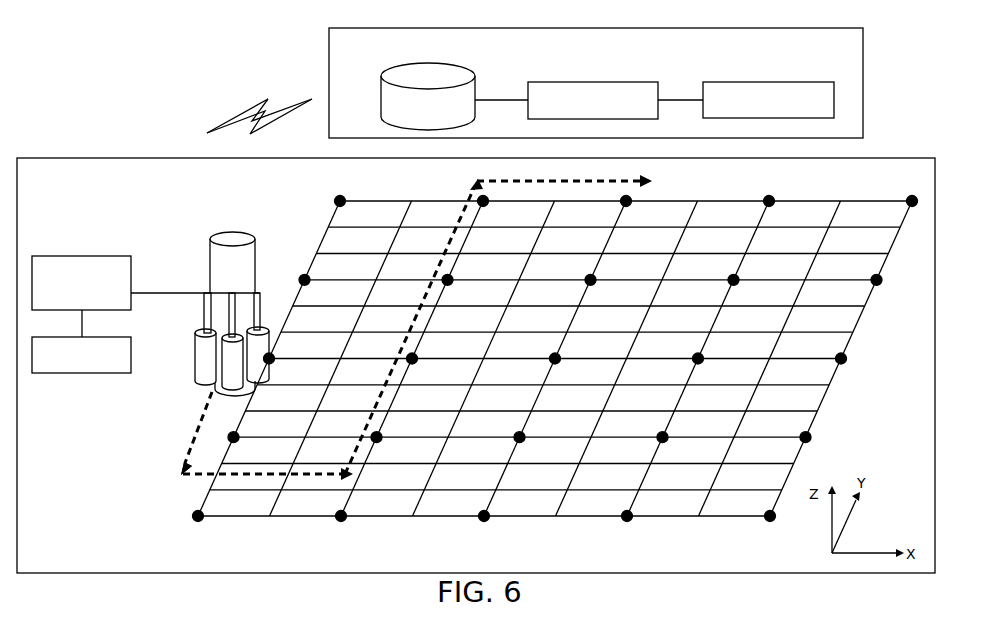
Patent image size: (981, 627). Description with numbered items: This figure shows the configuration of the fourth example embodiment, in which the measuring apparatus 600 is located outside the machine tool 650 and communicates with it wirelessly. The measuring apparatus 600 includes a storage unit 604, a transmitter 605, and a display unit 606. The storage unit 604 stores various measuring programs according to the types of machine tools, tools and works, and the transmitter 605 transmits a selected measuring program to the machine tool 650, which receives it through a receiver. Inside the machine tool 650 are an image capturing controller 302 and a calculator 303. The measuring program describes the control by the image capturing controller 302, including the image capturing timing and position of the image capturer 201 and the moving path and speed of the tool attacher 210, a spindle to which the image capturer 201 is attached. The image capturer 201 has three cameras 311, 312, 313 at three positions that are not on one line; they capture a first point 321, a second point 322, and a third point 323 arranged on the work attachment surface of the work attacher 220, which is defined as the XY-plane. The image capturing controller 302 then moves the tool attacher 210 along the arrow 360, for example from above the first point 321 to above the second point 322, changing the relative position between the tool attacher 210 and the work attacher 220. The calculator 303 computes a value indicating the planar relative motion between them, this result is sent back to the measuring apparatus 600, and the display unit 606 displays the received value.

The measuring apparatus 600 is at (327, 48).
The storage unit 604 is at (463, 78).
The transmitter 605 is at (617, 81).
The display unit 606 is at (787, 81).
The machine tool 650 is at (64, 157).
The tool attacher 210 is at (229, 231).
The image capturing controller 302 is at (132, 286).
The calculator 303 is at (132, 356).
The image capturer 201 is at (70, 398).
The camera 311 is at (200, 370).
The camera 312 is at (226, 380).
The camera 313 is at (252, 386).
The work attacher 220 is at (797, 458).
The arrow 360 is at (193, 441).
The first point 321 is at (185, 463).
The second point 322 is at (199, 522).
The third point 323 is at (342, 522).